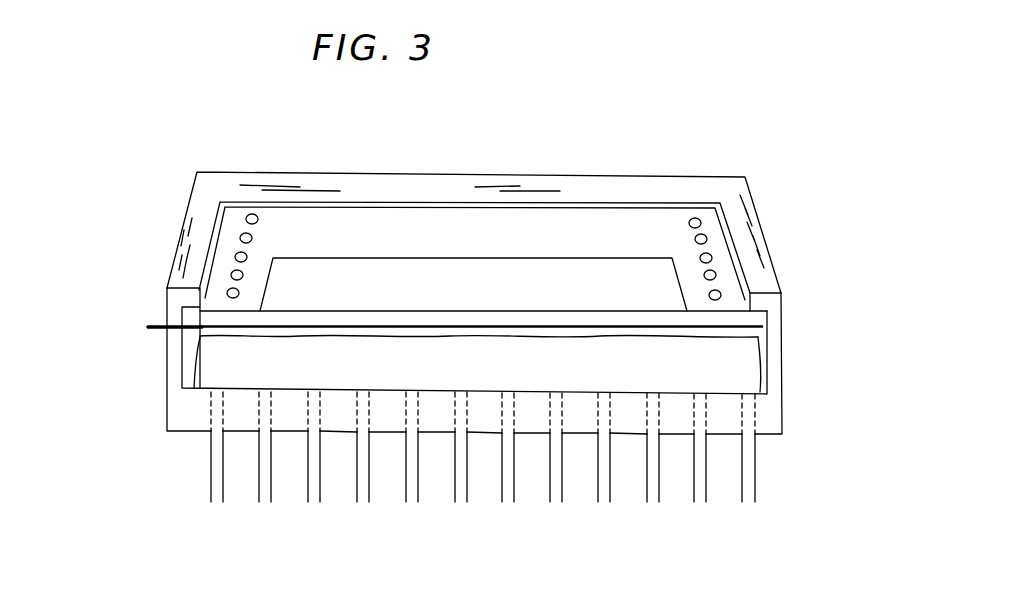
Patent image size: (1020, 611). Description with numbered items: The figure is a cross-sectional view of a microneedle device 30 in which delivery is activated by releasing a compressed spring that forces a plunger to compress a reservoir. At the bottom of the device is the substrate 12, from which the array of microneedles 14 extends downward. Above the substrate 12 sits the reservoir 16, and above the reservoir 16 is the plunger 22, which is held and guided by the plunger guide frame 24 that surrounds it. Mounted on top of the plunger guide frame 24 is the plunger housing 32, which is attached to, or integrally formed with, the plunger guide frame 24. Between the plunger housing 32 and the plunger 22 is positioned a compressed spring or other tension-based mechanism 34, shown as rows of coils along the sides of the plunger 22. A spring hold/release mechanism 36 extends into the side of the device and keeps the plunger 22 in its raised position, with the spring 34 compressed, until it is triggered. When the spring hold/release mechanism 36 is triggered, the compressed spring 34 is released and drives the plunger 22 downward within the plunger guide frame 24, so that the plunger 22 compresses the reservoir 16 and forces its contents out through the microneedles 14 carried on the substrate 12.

The microneedle device 30 is at (211, 82).
The plunger housing 32 is at (308, 173).
The compressed spring or other tension-based mechanism 34 is at (242, 218).
The plunger 22 is at (384, 300).
The plunger guide frame 24 is at (775, 323).
The spring hold/release mechanism 36 is at (148, 328).
The reservoir 16 is at (203, 367).
The substrate 12 is at (783, 413).
The microneedles 14 is at (760, 478).